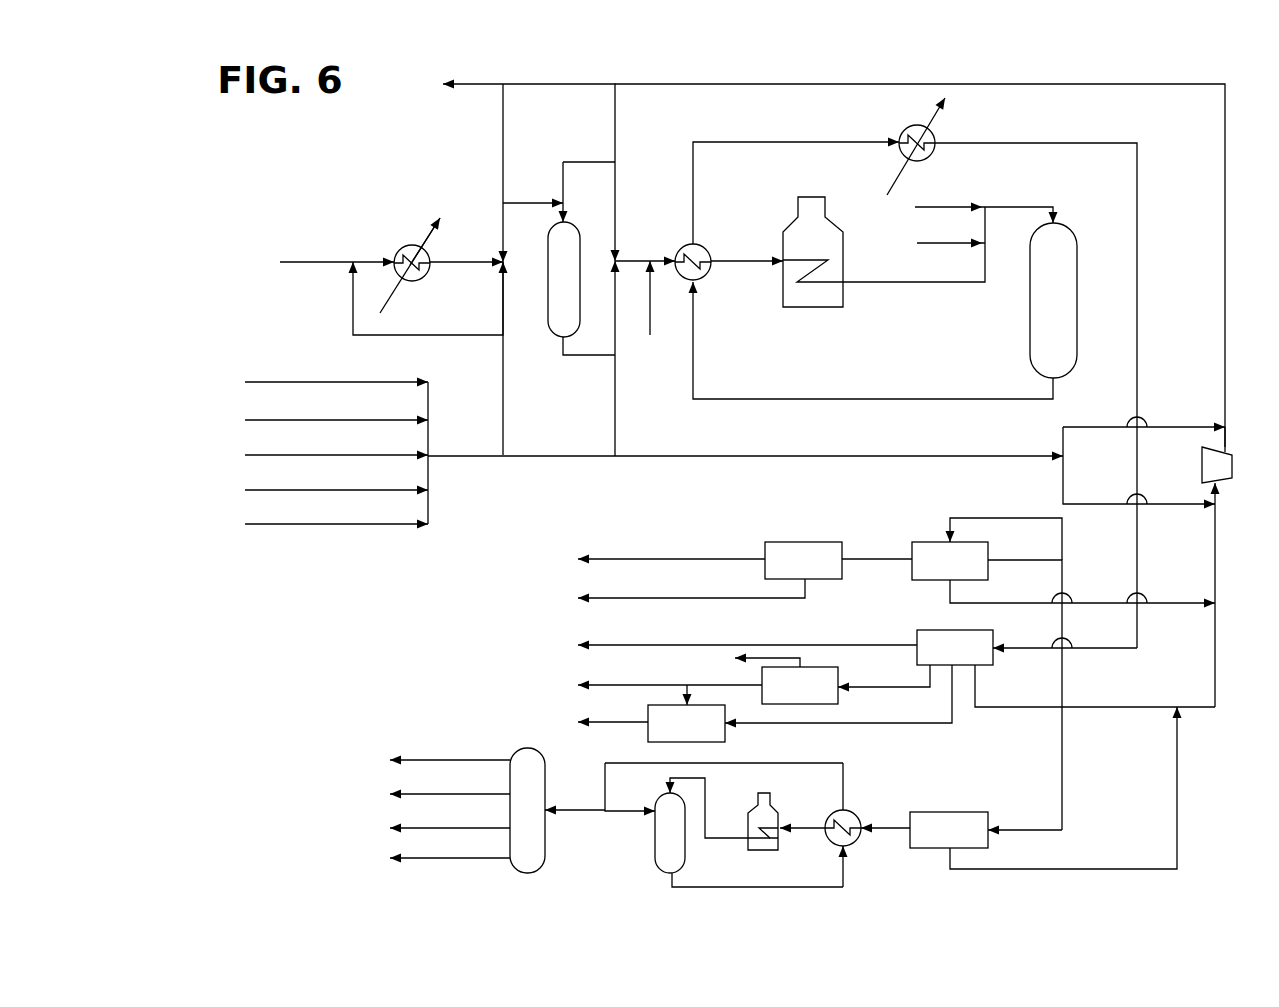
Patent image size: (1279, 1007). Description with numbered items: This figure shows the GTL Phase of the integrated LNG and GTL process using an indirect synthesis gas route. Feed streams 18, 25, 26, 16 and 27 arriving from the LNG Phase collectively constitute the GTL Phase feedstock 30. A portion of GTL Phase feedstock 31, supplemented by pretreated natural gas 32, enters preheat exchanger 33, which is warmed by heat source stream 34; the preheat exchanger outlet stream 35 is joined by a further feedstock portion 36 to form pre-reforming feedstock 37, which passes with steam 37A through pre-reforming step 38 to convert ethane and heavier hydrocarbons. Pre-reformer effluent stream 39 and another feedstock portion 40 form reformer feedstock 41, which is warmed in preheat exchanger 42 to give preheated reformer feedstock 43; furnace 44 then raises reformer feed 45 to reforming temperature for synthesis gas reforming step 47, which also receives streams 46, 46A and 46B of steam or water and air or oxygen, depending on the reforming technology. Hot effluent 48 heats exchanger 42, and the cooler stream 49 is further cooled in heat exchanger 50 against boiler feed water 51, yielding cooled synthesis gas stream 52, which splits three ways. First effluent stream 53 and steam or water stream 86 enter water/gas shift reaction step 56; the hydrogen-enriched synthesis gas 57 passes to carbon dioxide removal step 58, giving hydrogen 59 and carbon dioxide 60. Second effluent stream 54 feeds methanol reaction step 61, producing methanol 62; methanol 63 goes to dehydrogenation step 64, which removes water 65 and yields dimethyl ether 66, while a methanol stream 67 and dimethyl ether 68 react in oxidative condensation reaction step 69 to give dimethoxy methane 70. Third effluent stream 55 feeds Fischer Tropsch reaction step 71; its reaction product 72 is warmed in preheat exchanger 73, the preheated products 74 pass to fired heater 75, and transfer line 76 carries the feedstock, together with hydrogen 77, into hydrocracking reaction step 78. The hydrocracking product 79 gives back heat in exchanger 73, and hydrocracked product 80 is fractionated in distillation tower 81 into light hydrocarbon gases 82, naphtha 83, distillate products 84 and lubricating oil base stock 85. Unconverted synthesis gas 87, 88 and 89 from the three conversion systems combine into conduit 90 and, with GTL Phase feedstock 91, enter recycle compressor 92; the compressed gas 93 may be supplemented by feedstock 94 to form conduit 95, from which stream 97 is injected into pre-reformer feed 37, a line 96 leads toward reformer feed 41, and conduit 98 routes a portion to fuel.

The stream 16 is at (247, 490).
The stream 18 is at (278, 382).
The stream 25 is at (250, 420).
The stream 26 is at (247, 455).
The stream 27 is at (250, 523).
The GTL Phase feedstock 30 is at (482, 453).
The portion of GTL Phase feedstock 31 is at (447, 335).
The pretreated natural gas 32 is at (308, 260).
The preheat exchanger 33 is at (405, 244).
The heat source stream 34 is at (430, 237).
The preheat exchanger outlet stream 35 is at (445, 267).
The portion of GTL Phase feedstock 36 is at (503, 327).
The pre-reforming feedstock 37 is at (510, 207).
The steam 37A is at (598, 160).
The pre-reforming step 38 is at (575, 223).
The pre-reformer effluent stream 39 is at (575, 358).
The portion of GTL Phase feedstock 40 is at (616, 417).
The reformer feedstock 41 is at (633, 250).
The preheat exchanger 42 is at (688, 244).
The preheated reformer feedstock 43 is at (743, 260).
The furnace 44 is at (807, 197).
The reformer feed 45 is at (902, 285).
The stream 46 is at (943, 205).
The stream 46A is at (651, 325).
The stream 46B is at (930, 242).
The synthesis gas reforming step 47 is at (1077, 260).
The effluent 48 is at (787, 399).
The cooler stream 49 is at (740, 143).
The heat exchanger 50 is at (933, 128).
The boiler feed water 51 is at (893, 175).
The cooled synthesis gas stream 52 is at (1042, 137).
The first effluent stream 53 is at (1028, 560).
The second effluent stream 54 is at (1013, 648).
The third effluent stream 55 is at (1012, 827).
The water/gas shift reaction step 56 is at (935, 542).
The hydrogen-enriched synthesis gas 57 is at (877, 558).
The carbon dioxide removal step 58 is at (820, 542).
The hydrogen 59 is at (678, 597).
The carbon dioxide 60 is at (672, 558).
The methanol reaction step 61 is at (918, 628).
The methanol 62 is at (683, 645).
The methanol 63 is at (888, 690).
The dehydrogenation step 64 is at (840, 682).
The water 65 is at (735, 658).
The dimethyl ether 66 is at (603, 682).
The line 67 is at (878, 725).
The dimethyl ether 68 is at (682, 690).
The oxidative condensation reaction step 69 is at (725, 732).
The dimethoxy methane or polydimethoxy methane 70 is at (603, 718).
The Fischer Tropsch reaction step 71 is at (963, 810).
The Fischer Tropsch reaction product 72 is at (893, 825).
The preheat exchanger 73 is at (857, 845).
The preheated Fischer Tropsch products 74 is at (813, 828).
The furnace or fired heater 75 is at (750, 803).
The transfer line 76 is at (717, 840).
The hydrogen 77 is at (625, 813).
The hydrocracking or hydroprocessing reaction step 78 is at (653, 873).
The product of the hydrocracking or hydroprocessing reaction 79 is at (757, 887).
The hydrocracked product 80 is at (588, 810).
The fractionator or distillation tower 81 is at (527, 748).
The light hydrocarbon gases 82 is at (482, 760).
The gasoline boiling range naphtha 83 is at (412, 793).
The distillate boiling range products 84 is at (408, 827).
The lubricating oil base stock 85 is at (477, 860).
The stream 86 is at (997, 517).
The unconverted synthesis gas 87 is at (1007, 603).
The unconverted synthesis gas 88 is at (1013, 705).
The unconverted synthesis gas 89 is at (1082, 868).
The conduit 90 is at (1215, 568).
The GTL Phase feedstock 91 is at (1162, 507).
The synthesis gas recycle compressor 92 is at (1200, 467).
The compressed unconverted synthesis gas 93 is at (1227, 438).
The GTL Phase feedstock 94 is at (1190, 422).
The conduit 95 is at (1225, 192).
The line 96 is at (616, 125).
The stream 97 is at (503, 132).
The conduit 98 is at (475, 84).